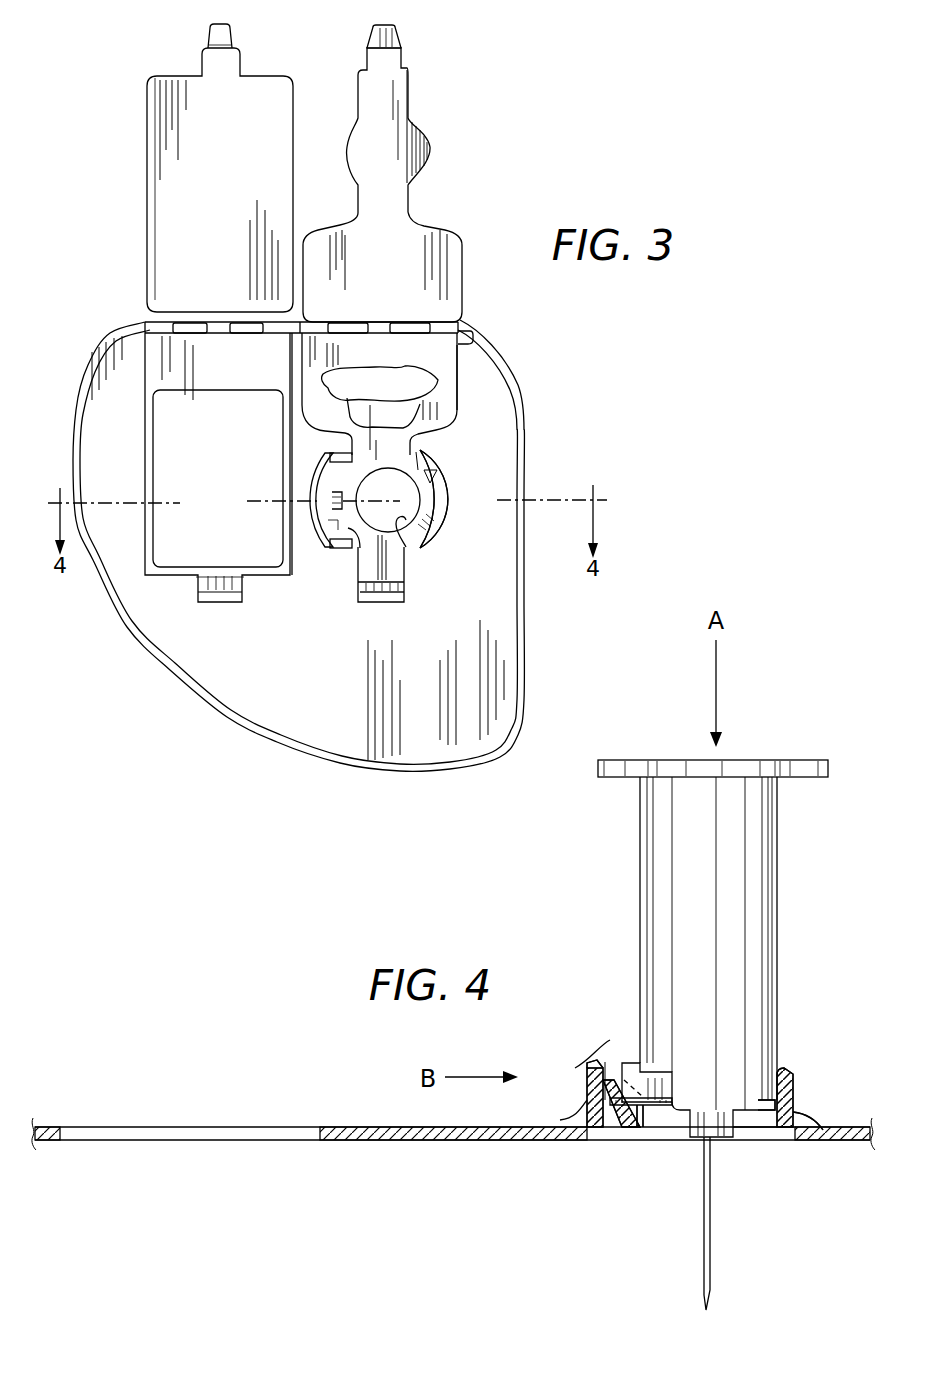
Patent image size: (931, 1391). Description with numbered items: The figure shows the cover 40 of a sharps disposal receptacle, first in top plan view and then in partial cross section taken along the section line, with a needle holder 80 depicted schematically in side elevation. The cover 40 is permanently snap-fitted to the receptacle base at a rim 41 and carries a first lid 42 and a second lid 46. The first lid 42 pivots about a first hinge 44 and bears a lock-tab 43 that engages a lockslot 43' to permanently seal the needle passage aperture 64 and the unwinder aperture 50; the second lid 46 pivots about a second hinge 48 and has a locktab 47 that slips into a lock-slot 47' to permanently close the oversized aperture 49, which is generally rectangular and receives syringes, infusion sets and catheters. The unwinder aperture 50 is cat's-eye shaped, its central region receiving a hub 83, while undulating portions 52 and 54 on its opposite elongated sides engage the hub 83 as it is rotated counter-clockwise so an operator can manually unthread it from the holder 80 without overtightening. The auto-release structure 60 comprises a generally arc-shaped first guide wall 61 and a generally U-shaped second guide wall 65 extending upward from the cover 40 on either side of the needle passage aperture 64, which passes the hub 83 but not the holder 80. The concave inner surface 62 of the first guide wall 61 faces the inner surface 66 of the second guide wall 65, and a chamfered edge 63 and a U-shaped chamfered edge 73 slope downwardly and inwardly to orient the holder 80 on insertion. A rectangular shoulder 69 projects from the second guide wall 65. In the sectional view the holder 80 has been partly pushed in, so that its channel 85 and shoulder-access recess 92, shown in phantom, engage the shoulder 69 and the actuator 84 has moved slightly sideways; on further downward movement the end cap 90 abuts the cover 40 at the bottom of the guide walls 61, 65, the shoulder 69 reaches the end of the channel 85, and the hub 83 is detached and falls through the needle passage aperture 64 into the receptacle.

In FIG. 3, the cover 40 is at (342, 416).
In FIG. 4, the cover 40 is at (453, 1072).
In FIG. 3, the rim 41 is at (517, 707).
In FIG. 3, the first lid 42 is at (414, 166).
In FIG. 3, the lock-tab 43 is at (426, 29).
In FIG. 3, the first hinge 44 is at (447, 326).
In FIG. 3, the second lid 46 is at (174, 159).
In FIG. 3, the locktab 47 is at (175, 27).
In FIG. 3, the second hinge 48 is at (175, 322).
In FIG. 3, the oversized aperture 49 is at (160, 455).
In FIG. 4, the oversized aperture 49 is at (272, 1127).
In FIG. 3, the unwinder aperture 50 is at (355, 362).
In FIG. 3, the undulating portion 52 is at (462, 360).
In FIG. 3, the undulating portion 54 is at (383, 423).
In FIG. 3, the auto-release structure 60 is at (401, 504).
In FIG. 4, the auto-release structure 60 is at (694, 1055).
In FIG. 3, the first guide wall 61 is at (432, 466).
In FIG. 4, the first guide wall 61 is at (822, 1135).
In FIG. 3, the concave inner surface 62 is at (440, 483).
In FIG. 4, the concave inner surface 62 is at (772, 1100).
In FIG. 3, the chamfered edge 63 is at (438, 525).
In FIG. 4, the chamfered edge 63 is at (777, 1068).
In FIG. 3, the needle passage aperture 64 is at (408, 553).
In FIG. 4, the needle passage aperture 64 is at (775, 1140).
In FIG. 3, the second guide wall 65 is at (325, 456).
In FIG. 4, the second guide wall 65 is at (587, 1118).
In FIG. 3, the inner surface 66 is at (336, 492).
In FIG. 3, the shoulder 69 is at (338, 520).
In FIG. 4, the shoulder 69 is at (600, 1062).
In FIG. 3, the chamfered edge 73 is at (353, 547).
In FIG. 4, the chamfered edge 73 is at (603, 1072).
In FIG. 3, the lock-slot 47' is at (252, 613).
In FIG. 3, the lockslot 43' is at (332, 695).
In FIG. 4, the holder 80 is at (728, 1035).
In FIG. 4, the hub 83 is at (711, 1248).
In FIG. 4, the actuator 84 is at (640, 1062).
In FIG. 4, the channel 85 is at (606, 1066).
In FIG. 4, the end cap 90 is at (676, 1140).
In FIG. 4, the shoulder-access recess 92 is at (644, 1130).